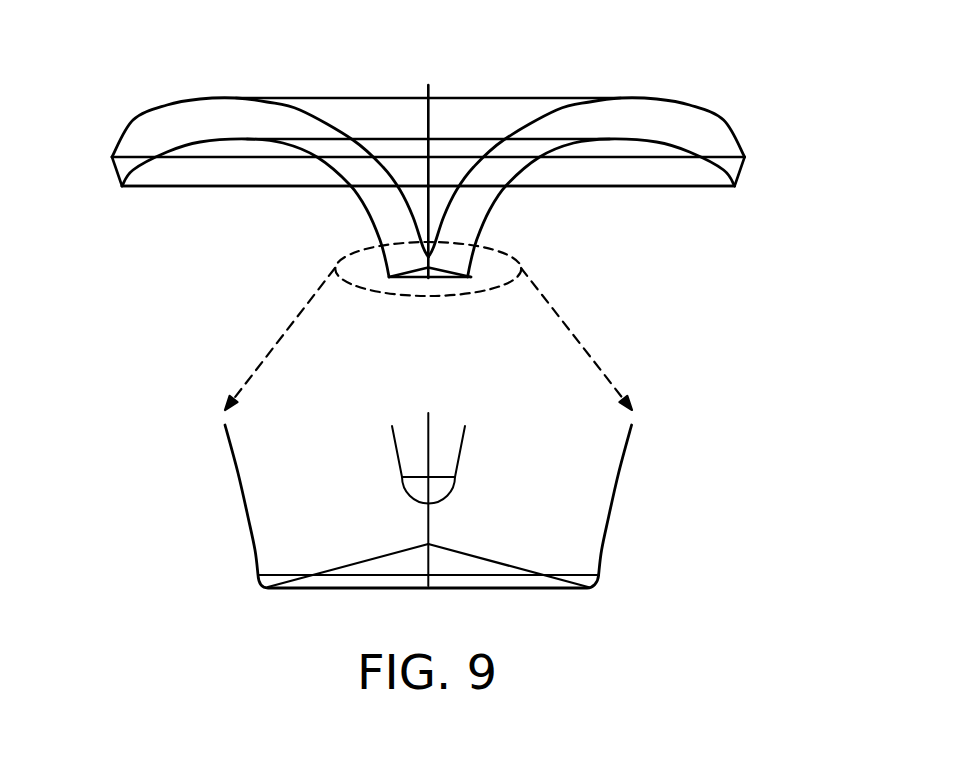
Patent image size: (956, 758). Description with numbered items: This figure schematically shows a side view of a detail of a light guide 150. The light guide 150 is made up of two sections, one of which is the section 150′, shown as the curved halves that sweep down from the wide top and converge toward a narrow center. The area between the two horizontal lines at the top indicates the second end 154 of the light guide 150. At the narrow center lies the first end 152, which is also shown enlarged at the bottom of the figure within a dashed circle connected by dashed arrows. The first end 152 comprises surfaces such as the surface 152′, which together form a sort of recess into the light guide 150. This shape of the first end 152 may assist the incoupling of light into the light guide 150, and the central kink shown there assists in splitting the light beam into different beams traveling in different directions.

The light guide 150 is at (436, 148).
The section of the light guide 150′ is at (238, 112).
The first end 152 is at (512, 253).
The surface of the first end 152′ is at (357, 562).
The second end 154 is at (733, 177).